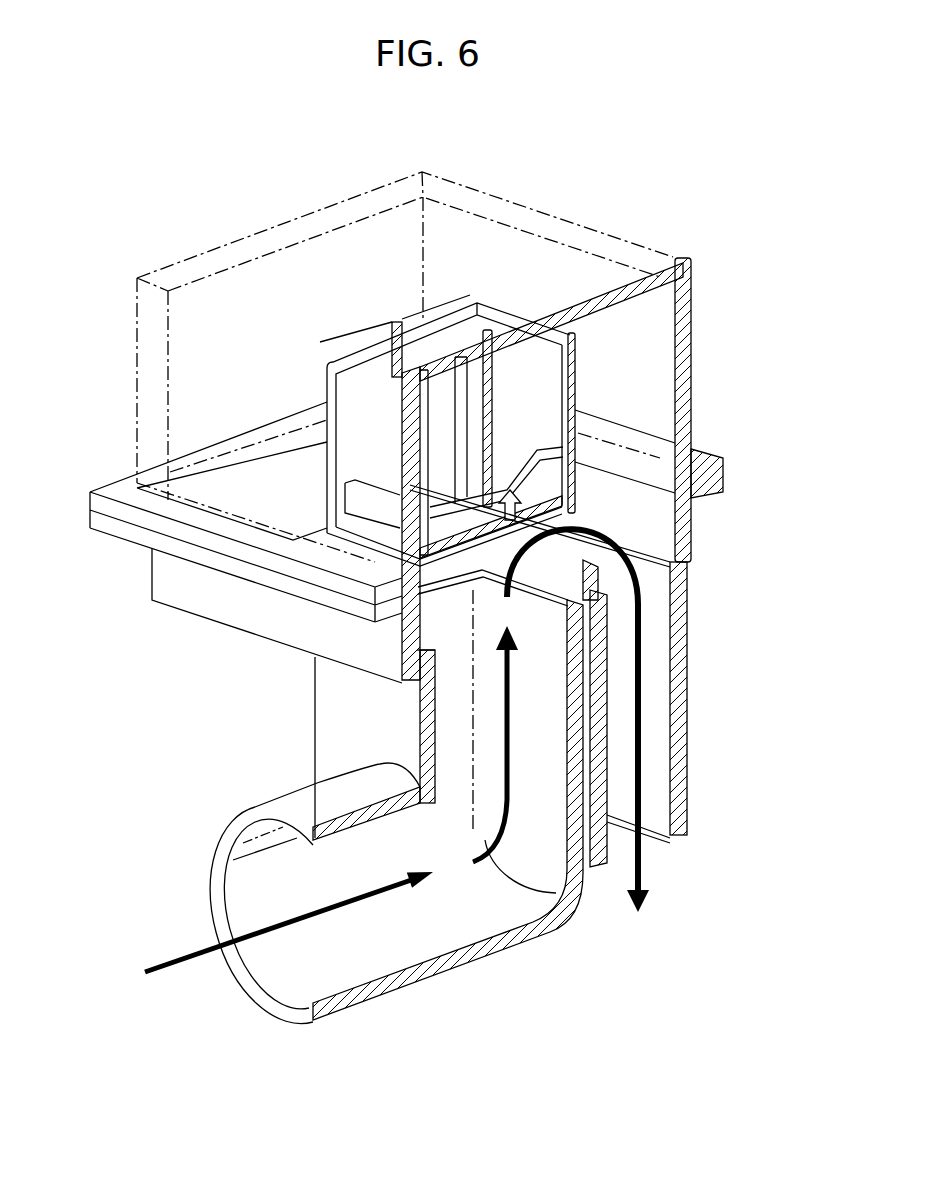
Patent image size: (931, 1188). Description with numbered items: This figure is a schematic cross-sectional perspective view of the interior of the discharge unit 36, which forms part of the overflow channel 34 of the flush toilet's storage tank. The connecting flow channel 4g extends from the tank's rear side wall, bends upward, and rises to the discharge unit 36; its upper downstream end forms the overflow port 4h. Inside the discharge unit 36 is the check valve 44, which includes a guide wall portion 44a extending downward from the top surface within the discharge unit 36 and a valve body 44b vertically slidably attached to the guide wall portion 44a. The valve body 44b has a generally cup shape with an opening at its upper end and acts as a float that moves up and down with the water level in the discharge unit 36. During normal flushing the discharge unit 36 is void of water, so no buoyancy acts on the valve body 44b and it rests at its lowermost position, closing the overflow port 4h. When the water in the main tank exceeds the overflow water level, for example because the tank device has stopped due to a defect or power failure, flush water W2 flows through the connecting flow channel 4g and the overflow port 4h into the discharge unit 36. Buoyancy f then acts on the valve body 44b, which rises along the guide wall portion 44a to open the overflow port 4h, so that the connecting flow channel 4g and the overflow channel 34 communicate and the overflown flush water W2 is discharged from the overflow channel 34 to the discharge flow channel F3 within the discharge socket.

The discharge unit 36 is at (541, 190).
The check valve 44 is at (553, 433).
The guide wall portion 44a is at (490, 388).
The valve body 44b is at (620, 418).
The overflow channel 34 is at (655, 660).
The connecting flow channel 4g is at (443, 913).
The overflow port 4h is at (455, 652).
The buoyancy f is at (545, 512).
The flush water W2 is at (183, 967).
The discharge flow channel F3 is at (656, 947).